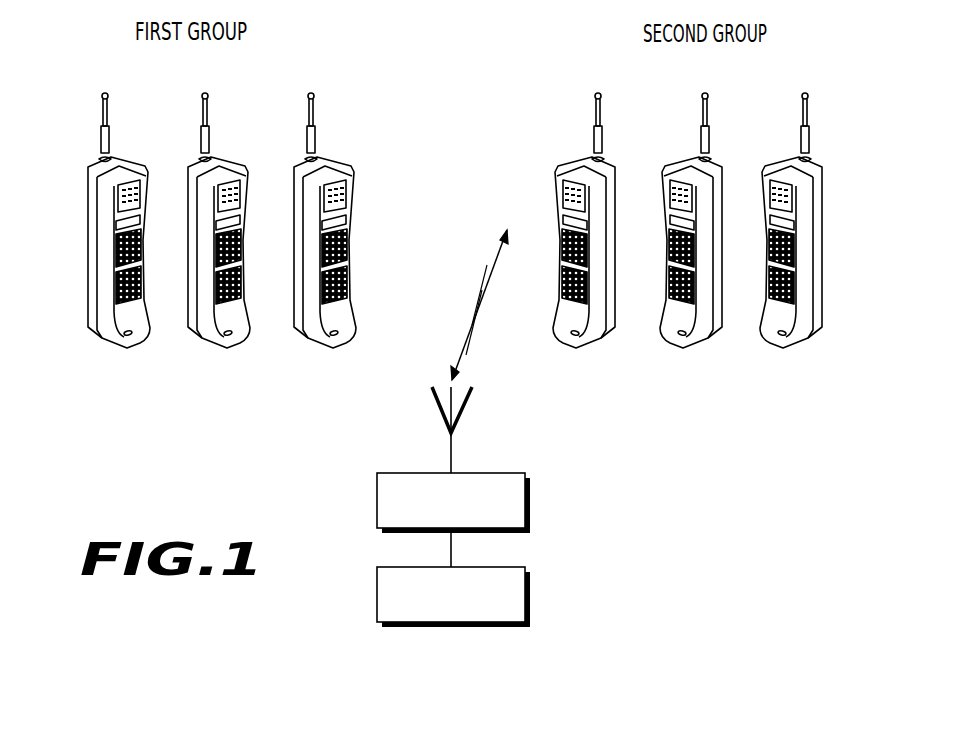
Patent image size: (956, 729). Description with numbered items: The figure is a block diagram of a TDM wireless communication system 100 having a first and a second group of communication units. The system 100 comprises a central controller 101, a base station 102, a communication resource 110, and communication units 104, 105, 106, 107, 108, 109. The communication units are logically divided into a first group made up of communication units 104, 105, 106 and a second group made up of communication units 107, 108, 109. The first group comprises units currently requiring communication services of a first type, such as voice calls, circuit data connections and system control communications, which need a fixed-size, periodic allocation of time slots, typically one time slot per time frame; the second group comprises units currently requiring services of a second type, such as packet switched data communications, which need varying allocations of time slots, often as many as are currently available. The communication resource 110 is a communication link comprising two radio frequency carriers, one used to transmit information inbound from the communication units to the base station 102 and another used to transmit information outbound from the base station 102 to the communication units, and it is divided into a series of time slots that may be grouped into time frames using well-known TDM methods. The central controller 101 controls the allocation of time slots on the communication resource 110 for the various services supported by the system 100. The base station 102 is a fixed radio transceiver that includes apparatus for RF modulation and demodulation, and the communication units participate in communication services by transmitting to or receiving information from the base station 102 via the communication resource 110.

The TDM wireless communication system 100 is at (303, 486).
The central controller 101 is at (531, 595).
The base station 102 is at (531, 499).
The communication unit 104 is at (98, 260).
The communication unit 105 is at (196, 250).
The communication unit 106 is at (303, 260).
The communication unit 107 is at (605, 262).
The communication unit 108 is at (713, 253).
The communication unit 109 is at (813, 267).
The communication resource 110 is at (470, 320).